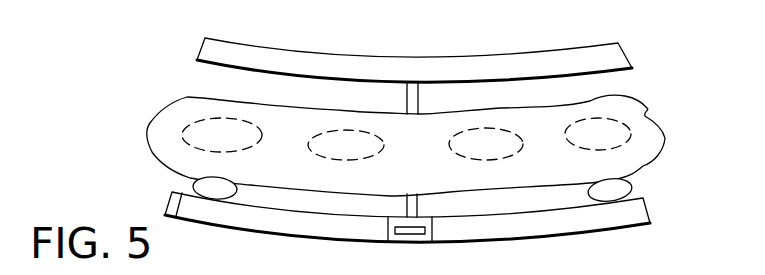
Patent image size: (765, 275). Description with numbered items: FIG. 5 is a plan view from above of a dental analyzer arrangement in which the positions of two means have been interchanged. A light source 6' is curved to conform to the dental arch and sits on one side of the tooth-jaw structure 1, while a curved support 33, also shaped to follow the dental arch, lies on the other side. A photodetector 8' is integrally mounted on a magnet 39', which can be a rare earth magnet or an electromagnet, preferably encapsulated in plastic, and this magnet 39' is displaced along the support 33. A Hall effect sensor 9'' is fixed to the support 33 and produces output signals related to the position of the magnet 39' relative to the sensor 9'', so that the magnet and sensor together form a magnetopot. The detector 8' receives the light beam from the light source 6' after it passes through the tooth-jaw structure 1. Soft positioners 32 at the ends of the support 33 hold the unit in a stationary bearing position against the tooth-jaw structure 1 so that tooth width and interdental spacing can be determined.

The tooth-jaw structure 1 is at (648, 112).
The light source 6' is at (414, 54).
The photodetector 8' is at (421, 176).
The sensor 9'' is at (146, 206).
The soft positioners 32 is at (205, 184).
The curved support 33 is at (580, 223).
The magnet 39' is at (380, 241).